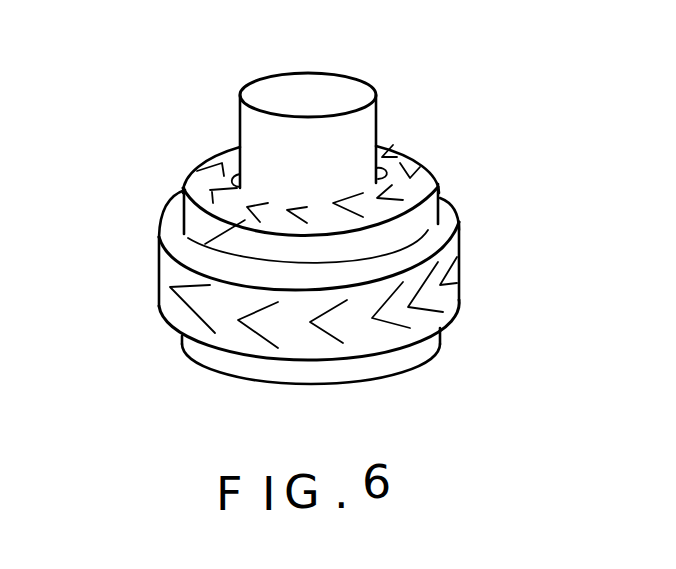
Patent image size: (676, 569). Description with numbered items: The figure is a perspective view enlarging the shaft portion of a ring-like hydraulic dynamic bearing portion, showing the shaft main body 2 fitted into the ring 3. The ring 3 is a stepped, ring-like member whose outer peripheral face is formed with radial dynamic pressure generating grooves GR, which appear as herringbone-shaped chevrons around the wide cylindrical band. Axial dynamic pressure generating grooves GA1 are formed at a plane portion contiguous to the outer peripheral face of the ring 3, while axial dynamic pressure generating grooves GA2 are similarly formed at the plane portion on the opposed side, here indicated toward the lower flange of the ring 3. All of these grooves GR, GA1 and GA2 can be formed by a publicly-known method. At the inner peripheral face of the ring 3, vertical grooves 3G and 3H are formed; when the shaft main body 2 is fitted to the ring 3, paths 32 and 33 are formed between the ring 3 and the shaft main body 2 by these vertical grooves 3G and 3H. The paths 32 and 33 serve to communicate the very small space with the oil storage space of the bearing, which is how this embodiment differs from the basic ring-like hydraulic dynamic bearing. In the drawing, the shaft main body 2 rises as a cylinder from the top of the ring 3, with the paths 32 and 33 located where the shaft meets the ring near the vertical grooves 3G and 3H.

The shaft main body 2 is at (363, 75).
The ring 3 is at (297, 247).
The vertical groove 3H is at (268, 165).
The vertical groove 3G is at (441, 202).
The path 33 is at (240, 172).
The path 32 is at (383, 165).
The axial dynamic pressure generating grooves GA1 is at (205, 244).
The axial dynamic pressure generating grooves GA2 is at (400, 374).
The radial dynamic pressure generating grooves GR is at (200, 313).